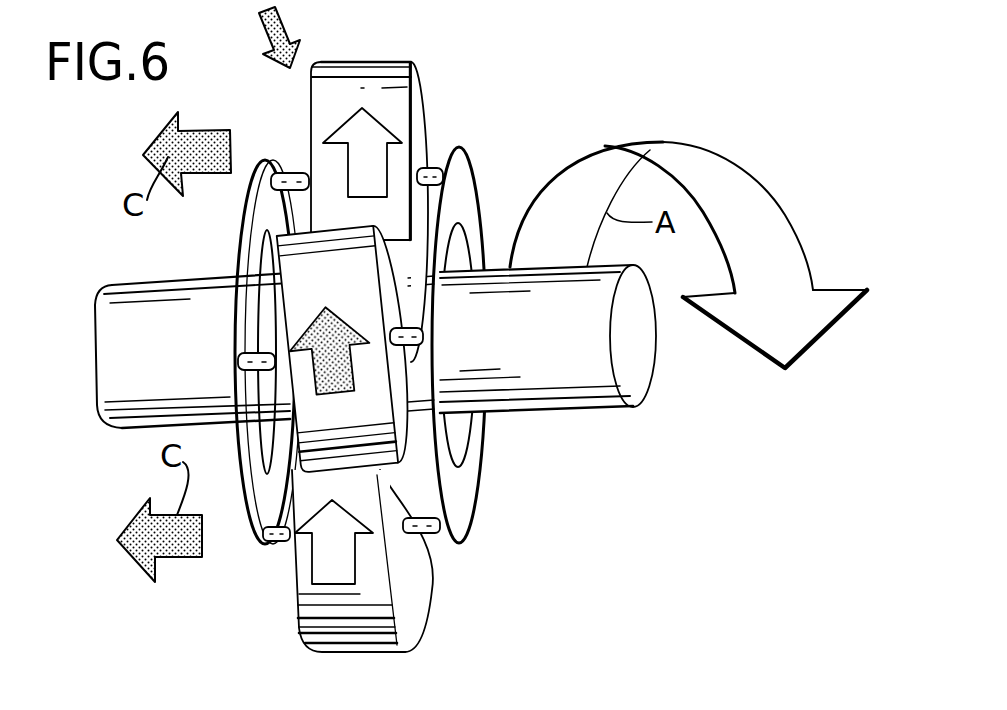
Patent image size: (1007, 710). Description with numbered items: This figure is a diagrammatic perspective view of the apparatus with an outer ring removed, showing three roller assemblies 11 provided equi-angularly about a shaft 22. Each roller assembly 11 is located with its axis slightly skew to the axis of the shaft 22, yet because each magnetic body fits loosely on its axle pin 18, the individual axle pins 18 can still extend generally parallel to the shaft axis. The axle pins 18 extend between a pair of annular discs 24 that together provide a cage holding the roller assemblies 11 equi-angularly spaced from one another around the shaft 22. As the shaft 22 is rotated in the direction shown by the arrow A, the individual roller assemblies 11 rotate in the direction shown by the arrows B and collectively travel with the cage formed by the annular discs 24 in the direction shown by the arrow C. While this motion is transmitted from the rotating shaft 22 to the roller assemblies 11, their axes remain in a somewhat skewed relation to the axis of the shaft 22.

The roller assembly 11 is at (321, 297).
The axle pin 18 is at (438, 168).
The shaft 22 is at (571, 412).
The annular disc 24 is at (266, 157).